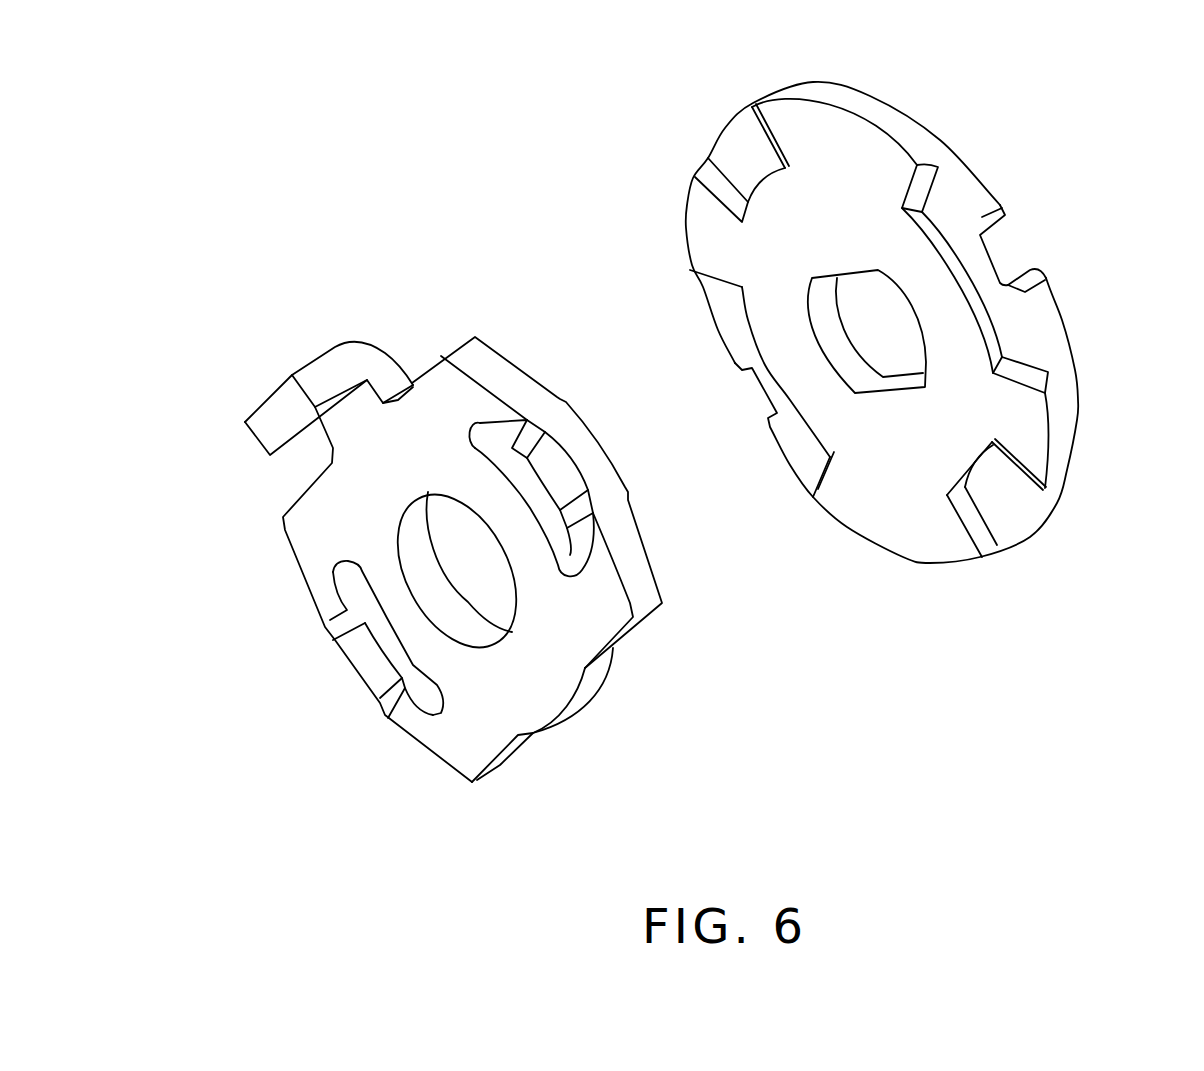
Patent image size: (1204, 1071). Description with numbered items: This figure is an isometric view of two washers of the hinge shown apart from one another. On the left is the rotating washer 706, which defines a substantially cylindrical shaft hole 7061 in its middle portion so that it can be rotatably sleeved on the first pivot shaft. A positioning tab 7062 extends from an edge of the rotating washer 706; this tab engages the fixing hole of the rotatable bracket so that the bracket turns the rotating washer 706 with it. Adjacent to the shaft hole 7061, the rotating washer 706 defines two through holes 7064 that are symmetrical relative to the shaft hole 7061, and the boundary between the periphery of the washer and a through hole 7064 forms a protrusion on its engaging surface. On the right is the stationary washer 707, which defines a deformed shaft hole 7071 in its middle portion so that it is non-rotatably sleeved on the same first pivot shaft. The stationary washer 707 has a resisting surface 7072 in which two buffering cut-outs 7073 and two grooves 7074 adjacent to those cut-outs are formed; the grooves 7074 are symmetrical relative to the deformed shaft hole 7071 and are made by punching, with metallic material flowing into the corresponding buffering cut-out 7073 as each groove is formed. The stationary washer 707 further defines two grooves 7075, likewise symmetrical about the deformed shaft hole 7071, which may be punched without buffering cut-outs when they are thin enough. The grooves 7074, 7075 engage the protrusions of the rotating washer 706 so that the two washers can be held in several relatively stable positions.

The rotating washer 706 is at (371, 284).
The shaft hole 7061 is at (490, 587).
The positioning tab 7062 is at (273, 415).
The through holes 7064 is at (555, 543).
The stationary washer 707 is at (978, 108).
The deformed shaft hole 7071 is at (900, 338).
The resisting surface 7072 is at (758, 245).
The buffering cut-outs 7073 is at (1003, 257).
The grooves 7074 is at (803, 448).
The grooves 7075 is at (1010, 508).